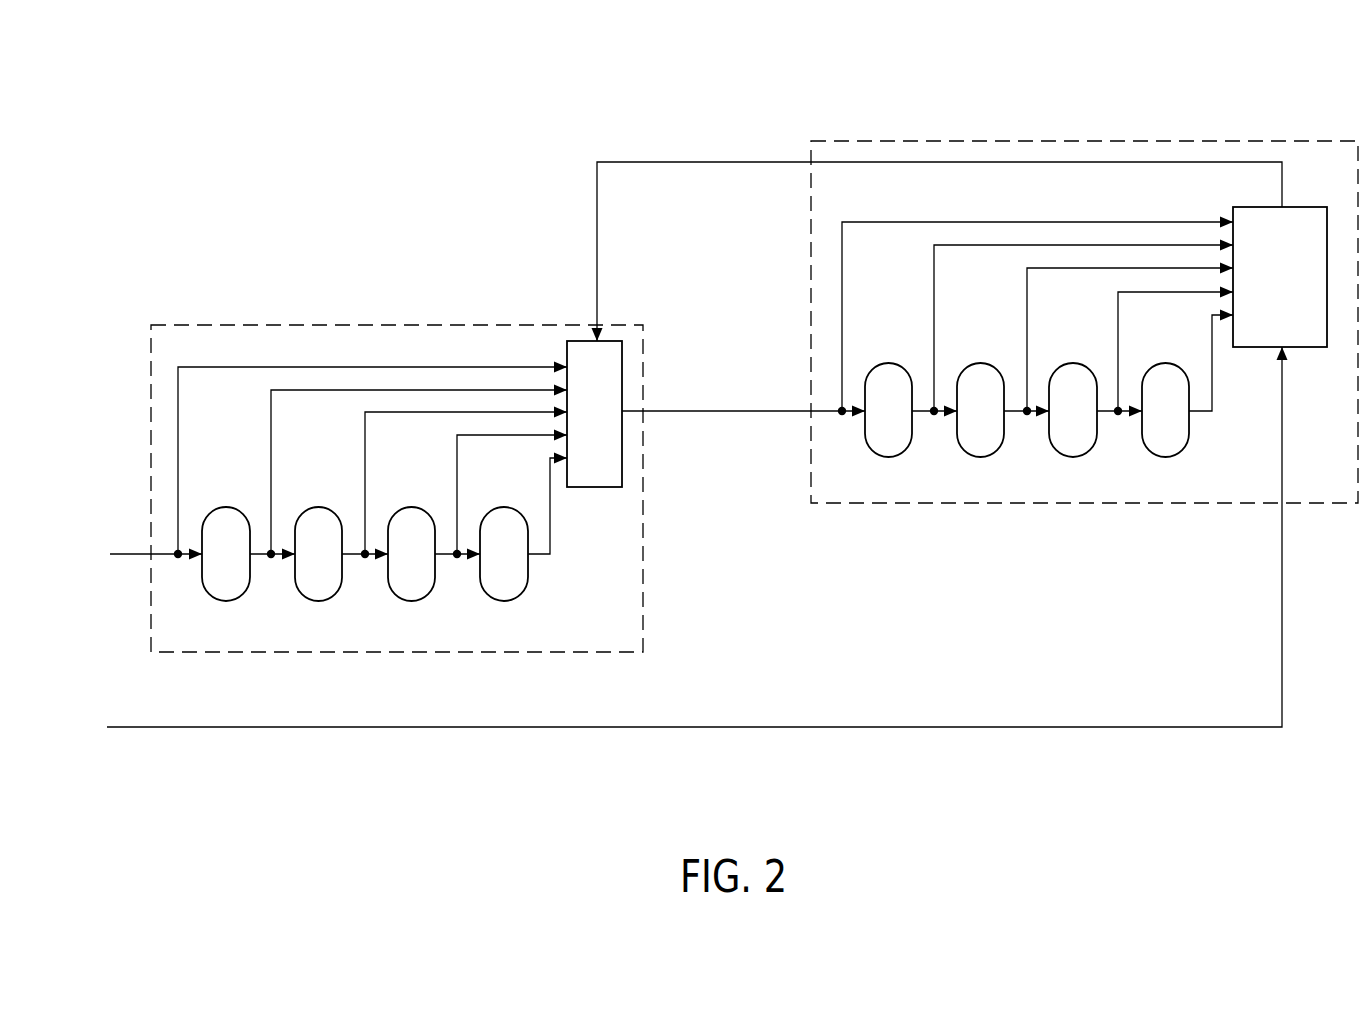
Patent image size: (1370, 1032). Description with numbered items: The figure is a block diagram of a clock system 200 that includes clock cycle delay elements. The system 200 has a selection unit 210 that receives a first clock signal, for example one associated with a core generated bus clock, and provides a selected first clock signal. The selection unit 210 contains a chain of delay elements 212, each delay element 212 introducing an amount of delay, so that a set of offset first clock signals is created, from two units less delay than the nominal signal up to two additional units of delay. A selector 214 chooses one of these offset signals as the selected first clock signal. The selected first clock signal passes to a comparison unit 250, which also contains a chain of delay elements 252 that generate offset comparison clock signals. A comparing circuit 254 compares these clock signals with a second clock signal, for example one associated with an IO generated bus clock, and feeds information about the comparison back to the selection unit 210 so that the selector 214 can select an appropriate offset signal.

The clock system 200 is at (395, 150).
The selection unit 210 is at (270, 325).
The delay element 212 is at (410, 601).
The selector 214 is at (594, 414).
The comparison unit 250 is at (866, 141).
The delay element 252 is at (887, 457).
The comparing circuit 254 is at (1280, 277).